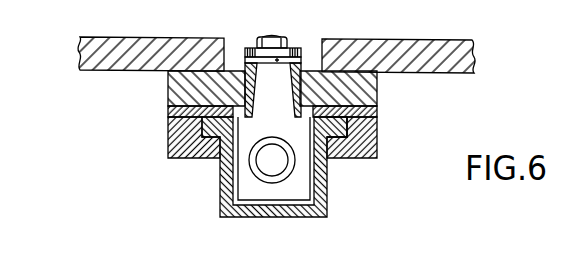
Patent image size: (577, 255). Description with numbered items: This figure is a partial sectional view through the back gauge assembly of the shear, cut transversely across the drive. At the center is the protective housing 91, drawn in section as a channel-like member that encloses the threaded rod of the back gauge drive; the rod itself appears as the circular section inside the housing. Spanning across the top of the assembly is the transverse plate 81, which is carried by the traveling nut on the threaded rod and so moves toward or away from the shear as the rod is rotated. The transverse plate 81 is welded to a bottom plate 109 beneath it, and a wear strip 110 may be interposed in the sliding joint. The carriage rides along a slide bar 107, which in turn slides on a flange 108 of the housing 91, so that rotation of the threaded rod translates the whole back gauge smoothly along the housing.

The transverse plate 81 is at (462, 49).
The bottom plate 109 is at (378, 91).
The wear strip 110 is at (377, 111).
The slide bar 107 is at (377, 142).
The flange 108 is at (335, 133).
The protective housing 91 is at (221, 197).